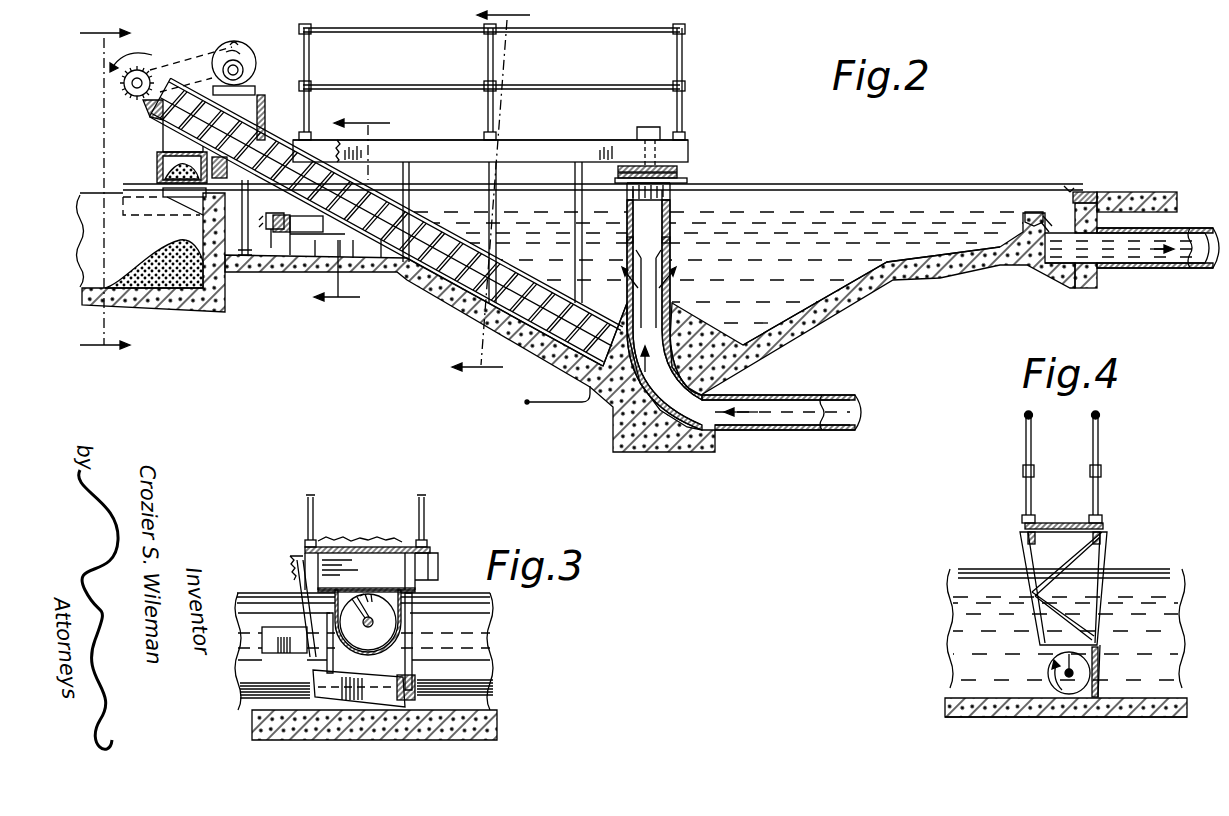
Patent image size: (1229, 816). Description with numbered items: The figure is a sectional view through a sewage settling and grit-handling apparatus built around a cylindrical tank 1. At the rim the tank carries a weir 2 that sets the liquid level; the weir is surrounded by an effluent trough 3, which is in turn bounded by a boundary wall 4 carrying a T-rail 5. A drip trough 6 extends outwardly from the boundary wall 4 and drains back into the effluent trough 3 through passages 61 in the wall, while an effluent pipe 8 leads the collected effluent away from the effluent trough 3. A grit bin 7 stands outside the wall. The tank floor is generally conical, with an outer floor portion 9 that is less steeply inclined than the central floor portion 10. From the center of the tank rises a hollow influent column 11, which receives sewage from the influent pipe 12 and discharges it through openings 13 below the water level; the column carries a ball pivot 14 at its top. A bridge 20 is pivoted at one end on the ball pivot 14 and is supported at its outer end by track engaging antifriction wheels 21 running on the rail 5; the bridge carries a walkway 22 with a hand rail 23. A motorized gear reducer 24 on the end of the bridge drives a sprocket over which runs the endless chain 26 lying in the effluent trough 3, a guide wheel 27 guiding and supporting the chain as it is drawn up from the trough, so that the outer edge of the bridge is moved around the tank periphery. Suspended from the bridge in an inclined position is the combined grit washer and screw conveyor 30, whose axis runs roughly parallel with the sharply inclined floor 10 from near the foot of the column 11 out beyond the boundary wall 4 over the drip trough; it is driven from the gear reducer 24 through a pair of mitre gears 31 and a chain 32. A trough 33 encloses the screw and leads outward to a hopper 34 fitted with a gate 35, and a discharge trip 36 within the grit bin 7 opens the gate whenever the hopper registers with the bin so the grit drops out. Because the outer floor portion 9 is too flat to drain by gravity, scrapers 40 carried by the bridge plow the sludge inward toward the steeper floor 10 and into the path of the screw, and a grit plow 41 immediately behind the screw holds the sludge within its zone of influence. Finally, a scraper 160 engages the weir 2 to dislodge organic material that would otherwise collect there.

In FIG. 2, the cylindrical tank 1 is at (897, 286).
In FIG. 3, the cylindrical tank 1 is at (476, 744).
In FIG. 4, the cylindrical tank 1 is at (1148, 722).
In FIG. 2, the weir 2 is at (1032, 212).
In FIG. 3, the weir 2 is at (463, 640).
In FIG. 2, the effluent trough 3 is at (1065, 258).
In FIG. 2, the boundary wall 4 is at (1102, 178).
In FIG. 3, the boundary wall 4 is at (477, 613).
In FIG. 4, the boundary wall 4 is at (1162, 583).
In FIG. 2, the T-rail 5 is at (1085, 192).
In FIG. 3, the T-rail 5 is at (263, 595).
In FIG. 4, the T-rail 5 is at (1151, 569).
In FIG. 2, the drip trough 6 is at (140, 190).
In FIG. 2, the grit bin 7 is at (92, 206).
In FIG. 2, the effluent pipe 8 is at (1134, 269).
In FIG. 2, the outer floor portion 9 is at (937, 255).
In FIG. 3, the outer floor portion 9 is at (480, 712).
In FIG. 2, the central floor portion 10 is at (462, 310).
In FIG. 4, the central floor portion 10 is at (983, 718).
In FIG. 2, the hollow influent column 11 is at (672, 314).
In FIG. 2, the influent pipe 12 is at (770, 432).
In FIG. 2, the openings 13 is at (662, 264).
In FIG. 2, the ball pivot 14 is at (684, 172).
In FIG. 2, the bridge 20 is at (536, 148).
In FIG. 3, the bridge 20 is at (440, 560).
In FIG. 4, the bridge 20 is at (1108, 540).
In FIG. 2, the track engaging antifriction wheels 21 is at (228, 173).
In FIG. 2, the walkway 22 is at (434, 140).
In FIG. 3, the walkway 22 is at (368, 546).
In FIG. 4, the walkway 22 is at (1060, 523).
In FIG. 2, the hand rail 23 is at (600, 31).
In FIG. 3, the hand rail 23 is at (306, 521).
In FIG. 4, the hand rail 23 is at (1093, 440).
In FIG. 2, the motorized gear reducer 24 is at (240, 44).
In FIG. 2, the endless chain 26 is at (265, 236).
In FIG. 2, the guide wheel 27 is at (270, 214).
In FIG. 2, the combined grit washer and screw conveyor 30 is at (417, 223).
In FIG. 3, the combined grit washer and screw conveyor 30 is at (352, 617).
In FIG. 4, the combined grit washer and screw conveyor 30 is at (1081, 684).
In FIG. 2, the mitre gears 31 is at (133, 97).
In FIG. 2, the chain 32 is at (156, 62).
In FIG. 2, the trough 33 is at (381, 258).
In FIG. 3, the trough 33 is at (405, 602).
In FIG. 2, the hopper 34 is at (162, 140).
In FIG. 2, the gate 35 is at (157, 168).
In FIG. 2, the discharge trip 36 is at (177, 198).
In FIG. 2, the scrapers 40 is at (327, 257).
In FIG. 3, the scrapers 40 is at (388, 678).
In FIG. 2, the grit plow 41 is at (560, 295).
In FIG. 4, the grit plow 41 is at (1100, 677).
In FIG. 2, the passages 61 is at (1072, 192).
In FIG. 2, the scraper 160 is at (284, 224).
In FIG. 3, the scraper 160 is at (283, 656).